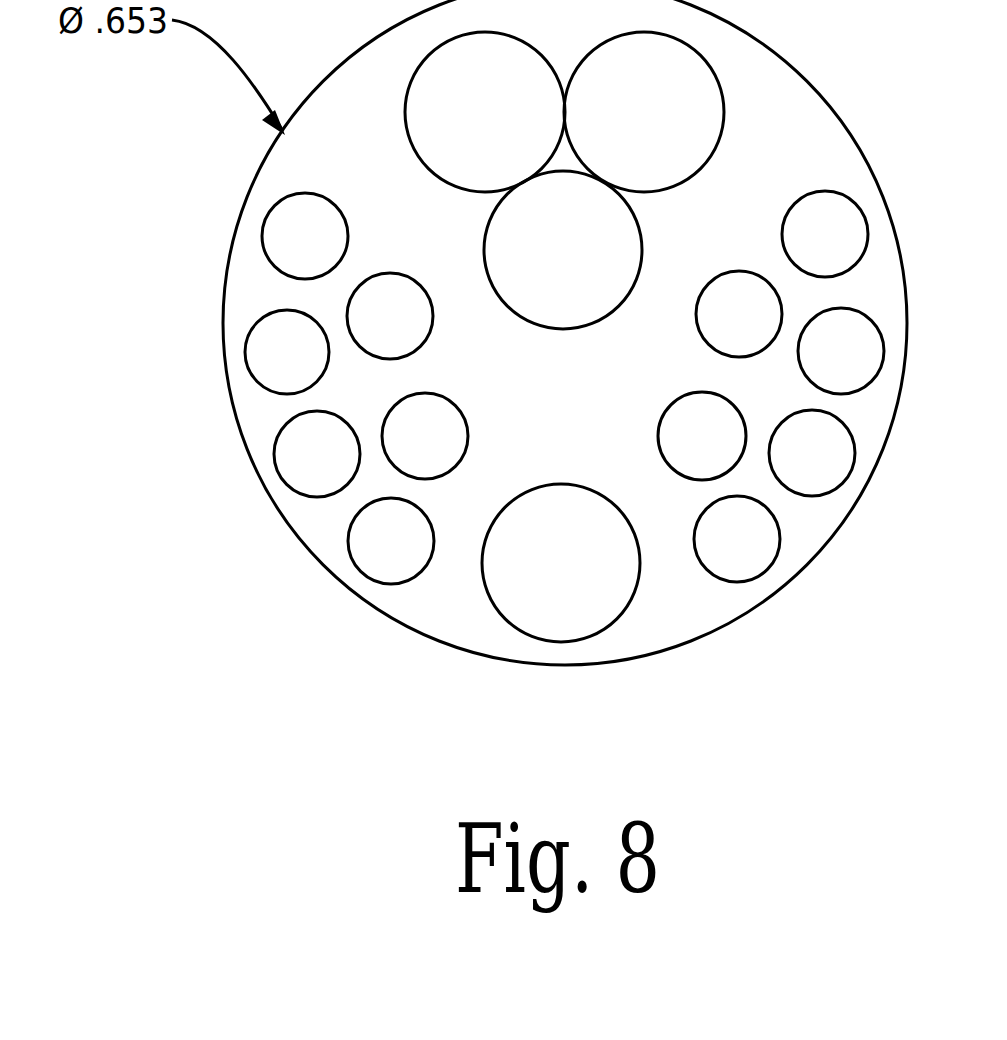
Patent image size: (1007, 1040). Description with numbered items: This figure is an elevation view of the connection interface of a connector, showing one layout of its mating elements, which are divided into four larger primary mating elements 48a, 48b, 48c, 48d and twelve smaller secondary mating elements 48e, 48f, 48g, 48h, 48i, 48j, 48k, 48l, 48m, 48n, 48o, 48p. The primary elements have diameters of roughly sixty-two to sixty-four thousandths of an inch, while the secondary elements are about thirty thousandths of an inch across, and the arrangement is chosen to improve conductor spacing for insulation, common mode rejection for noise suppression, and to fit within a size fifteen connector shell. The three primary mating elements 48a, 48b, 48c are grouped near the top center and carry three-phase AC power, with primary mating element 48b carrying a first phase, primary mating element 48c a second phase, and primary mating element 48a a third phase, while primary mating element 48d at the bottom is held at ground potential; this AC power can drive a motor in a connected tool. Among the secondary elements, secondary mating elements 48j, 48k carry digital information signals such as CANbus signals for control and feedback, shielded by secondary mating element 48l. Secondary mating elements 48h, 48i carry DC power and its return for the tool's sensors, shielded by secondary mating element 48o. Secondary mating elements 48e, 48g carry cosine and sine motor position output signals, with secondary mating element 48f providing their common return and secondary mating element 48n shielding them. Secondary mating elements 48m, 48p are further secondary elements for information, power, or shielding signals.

The primary mating element 48a is at (534, 267).
The primary mating element 48b is at (456, 129).
The primary mating element 48c is at (615, 129).
The primary mating element 48d is at (532, 580).
The secondary mating element 48e is at (288, 471).
The secondary mating element 48f is at (258, 369).
The secondary mating element 48g is at (276, 253).
The secondary mating element 48h is at (796, 251).
The secondary mating element 48i is at (812, 368).
The secondary mating element 48j is at (673, 453).
The secondary mating element 48k is at (708, 556).
The secondary mating element 48l is at (362, 558).
The secondary mating element 48m is at (392, 453).
The secondary mating element 48n is at (361, 333).
The secondary mating element 48o is at (710, 331).
The secondary mating element 48p is at (783, 470).